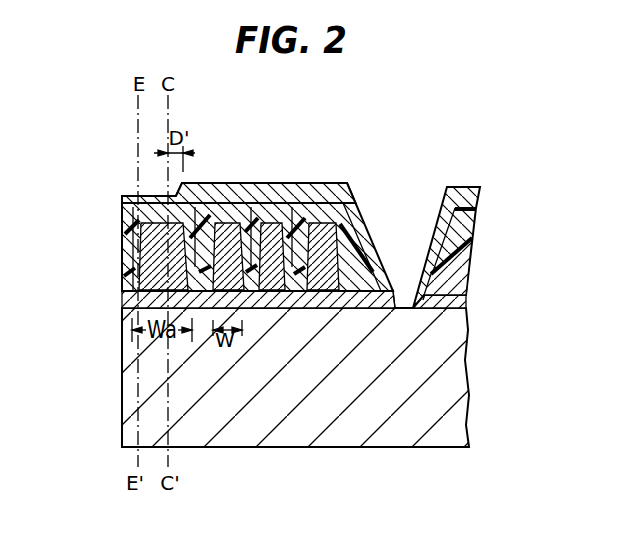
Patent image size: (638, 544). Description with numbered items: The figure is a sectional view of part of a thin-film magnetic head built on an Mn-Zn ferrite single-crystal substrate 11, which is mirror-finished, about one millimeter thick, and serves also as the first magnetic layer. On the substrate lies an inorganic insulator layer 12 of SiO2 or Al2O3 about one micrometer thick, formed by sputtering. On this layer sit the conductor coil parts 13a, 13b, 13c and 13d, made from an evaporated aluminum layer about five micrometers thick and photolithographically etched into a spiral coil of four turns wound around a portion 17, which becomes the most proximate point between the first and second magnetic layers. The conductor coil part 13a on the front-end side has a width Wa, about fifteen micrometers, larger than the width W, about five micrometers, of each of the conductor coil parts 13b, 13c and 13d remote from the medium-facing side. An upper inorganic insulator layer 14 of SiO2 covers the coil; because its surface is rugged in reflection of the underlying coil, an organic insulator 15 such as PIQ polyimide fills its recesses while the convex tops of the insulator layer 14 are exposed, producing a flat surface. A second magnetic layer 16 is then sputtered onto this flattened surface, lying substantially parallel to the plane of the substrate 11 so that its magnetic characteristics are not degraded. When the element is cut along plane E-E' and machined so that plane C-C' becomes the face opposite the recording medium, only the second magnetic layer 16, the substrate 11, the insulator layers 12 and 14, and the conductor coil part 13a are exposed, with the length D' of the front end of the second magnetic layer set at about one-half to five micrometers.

The Mn-Zn ferrite single-crystal substrate 11 is at (448, 388).
The inorganic insulator layer 12 is at (122, 298).
The conductor coil part 13a is at (192, 223).
The conductor coil part 13b is at (245, 222).
The conductor coil part 13c is at (300, 222).
The conductor coil part 13d is at (349, 207).
The inorganic insulator layer 14 is at (125, 278).
The organic insulator 15 is at (129, 227).
The second magnetic layer 16 is at (124, 197).
The portion 17 is at (400, 300).